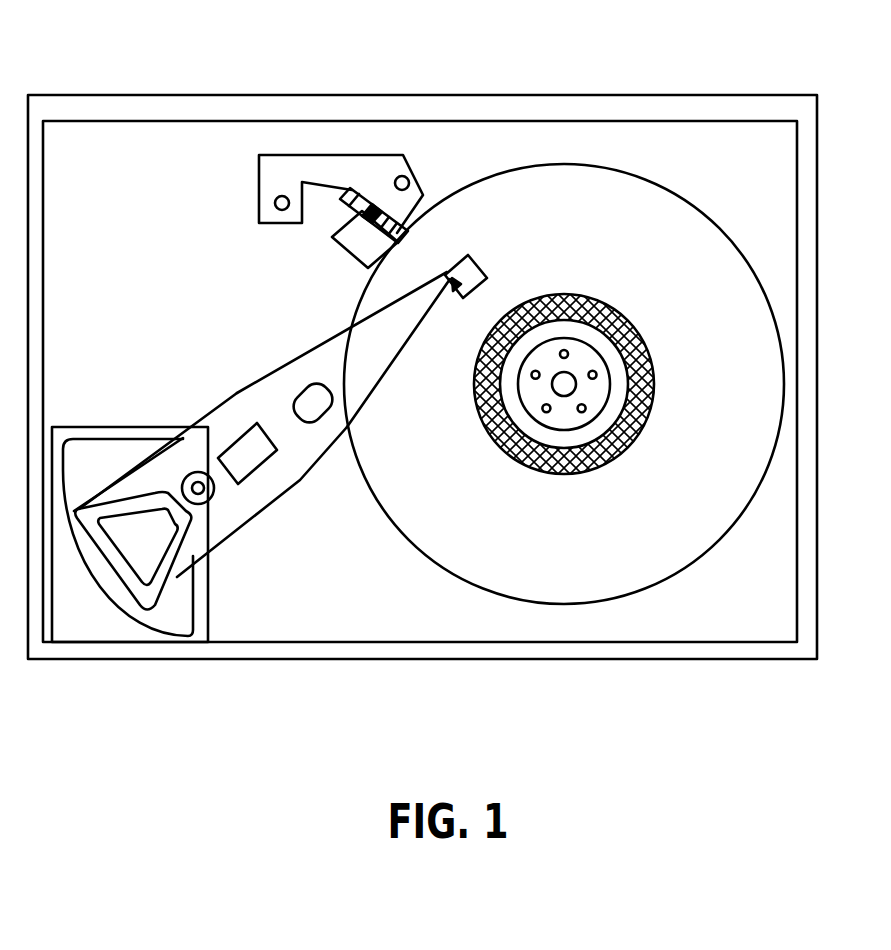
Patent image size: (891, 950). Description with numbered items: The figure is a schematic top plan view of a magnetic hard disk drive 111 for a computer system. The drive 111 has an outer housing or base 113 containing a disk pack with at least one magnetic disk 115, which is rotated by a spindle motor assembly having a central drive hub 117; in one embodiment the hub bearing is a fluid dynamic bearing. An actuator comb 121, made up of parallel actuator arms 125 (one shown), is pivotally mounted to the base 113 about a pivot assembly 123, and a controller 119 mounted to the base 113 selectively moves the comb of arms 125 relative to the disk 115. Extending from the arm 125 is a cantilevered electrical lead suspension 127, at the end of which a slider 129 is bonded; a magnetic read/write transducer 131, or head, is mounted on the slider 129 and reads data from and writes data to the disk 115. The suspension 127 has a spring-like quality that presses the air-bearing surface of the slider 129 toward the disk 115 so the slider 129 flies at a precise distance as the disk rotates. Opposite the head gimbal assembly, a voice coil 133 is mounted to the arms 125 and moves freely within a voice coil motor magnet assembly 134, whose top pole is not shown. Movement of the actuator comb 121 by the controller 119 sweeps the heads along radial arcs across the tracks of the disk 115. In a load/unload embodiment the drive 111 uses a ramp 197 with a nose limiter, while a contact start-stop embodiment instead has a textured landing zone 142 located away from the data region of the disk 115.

The hard disk drive 111 is at (452, 42).
The base 113 is at (807, 153).
The magnetic disk 115 is at (677, 197).
The central drive hub 117 is at (593, 393).
The controller 119 is at (140, 630).
The actuator comb 121 is at (183, 403).
The pivot assembly 123 is at (210, 497).
The actuator arm 125 is at (305, 478).
The electrical lead suspension 127 is at (383, 347).
The slider 129 is at (470, 263).
The magnetic read/write transducer 131 is at (487, 278).
The voice coil 133 is at (110, 508).
The voice coil motor magnet assembly 134 is at (126, 612).
The textured landing zone 142 is at (580, 293).
The ramp 197 is at (360, 260).